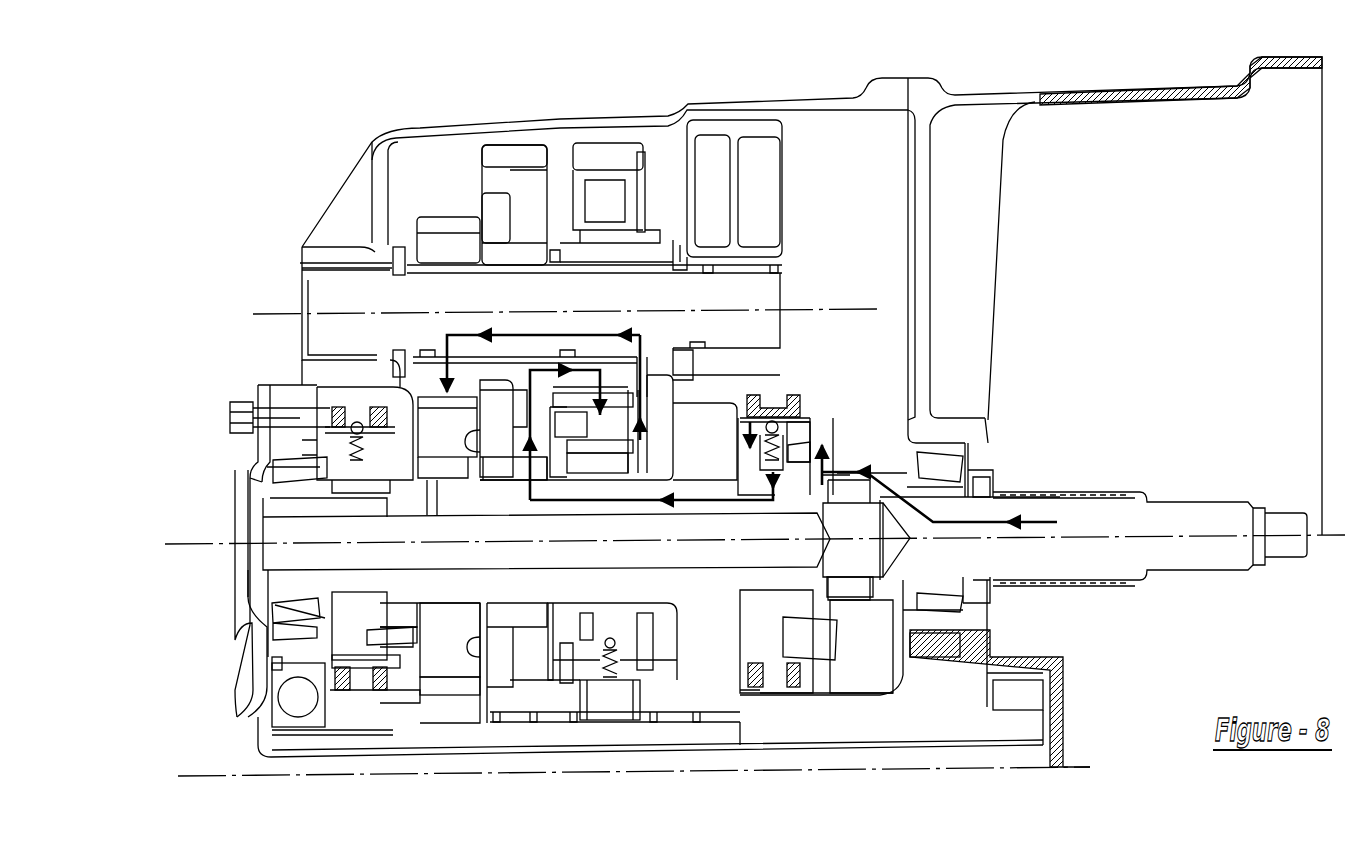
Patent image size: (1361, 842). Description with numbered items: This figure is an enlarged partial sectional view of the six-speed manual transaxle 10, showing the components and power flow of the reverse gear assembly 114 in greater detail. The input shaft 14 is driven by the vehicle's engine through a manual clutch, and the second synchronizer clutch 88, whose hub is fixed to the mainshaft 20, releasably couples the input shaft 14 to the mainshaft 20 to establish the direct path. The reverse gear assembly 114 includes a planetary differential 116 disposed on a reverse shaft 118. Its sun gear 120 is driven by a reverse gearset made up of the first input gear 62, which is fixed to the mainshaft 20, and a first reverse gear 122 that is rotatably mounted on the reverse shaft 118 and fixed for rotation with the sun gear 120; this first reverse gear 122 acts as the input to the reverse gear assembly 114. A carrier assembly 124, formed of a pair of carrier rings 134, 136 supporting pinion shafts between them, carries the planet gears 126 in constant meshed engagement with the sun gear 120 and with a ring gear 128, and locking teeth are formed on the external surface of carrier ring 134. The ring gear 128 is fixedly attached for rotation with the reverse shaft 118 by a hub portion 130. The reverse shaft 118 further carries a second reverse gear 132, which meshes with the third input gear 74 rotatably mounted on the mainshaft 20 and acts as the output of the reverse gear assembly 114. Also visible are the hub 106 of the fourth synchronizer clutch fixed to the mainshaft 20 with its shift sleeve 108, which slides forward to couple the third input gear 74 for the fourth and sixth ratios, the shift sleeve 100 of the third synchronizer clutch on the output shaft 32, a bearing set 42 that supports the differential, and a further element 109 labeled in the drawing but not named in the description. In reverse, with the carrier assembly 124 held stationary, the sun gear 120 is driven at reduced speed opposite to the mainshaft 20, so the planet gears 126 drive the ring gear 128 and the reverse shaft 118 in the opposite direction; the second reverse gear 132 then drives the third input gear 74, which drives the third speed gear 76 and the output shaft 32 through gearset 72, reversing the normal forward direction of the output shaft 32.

The manual transaxle 10 is at (307, 180).
The input shaft 14 is at (1210, 522).
The mainshaft 20 is at (282, 513).
The output shaft 32 is at (1032, 730).
The bearing set 42 is at (775, 395).
The first input gear 62 is at (507, 468).
The gearset 72 is at (435, 452).
The third input gear 74 is at (447, 462).
The third speed gear 76 is at (458, 683).
The second synchronizer clutch 88 is at (808, 402).
The shift sleeve 100 is at (618, 622).
The hub 106 is at (345, 478).
The shift sleeve 108 is at (325, 408).
The bearing 109 is at (363, 700).
The reverse gear assembly 114 is at (383, 128).
The planetary differential 116 is at (552, 97).
The reverse shaft 118 is at (765, 290).
The sun gear 120 is at (400, 215).
The first reverse gear 122 is at (522, 153).
The carrier assembly 124 is at (645, 413).
The planet gears 126 is at (625, 400).
The ring gear 128 is at (613, 147).
The hub portion 130 is at (643, 170).
The second reverse gear 132 is at (447, 220).
The carrier ring 134 is at (567, 462).
The carrier ring 136 is at (630, 440).